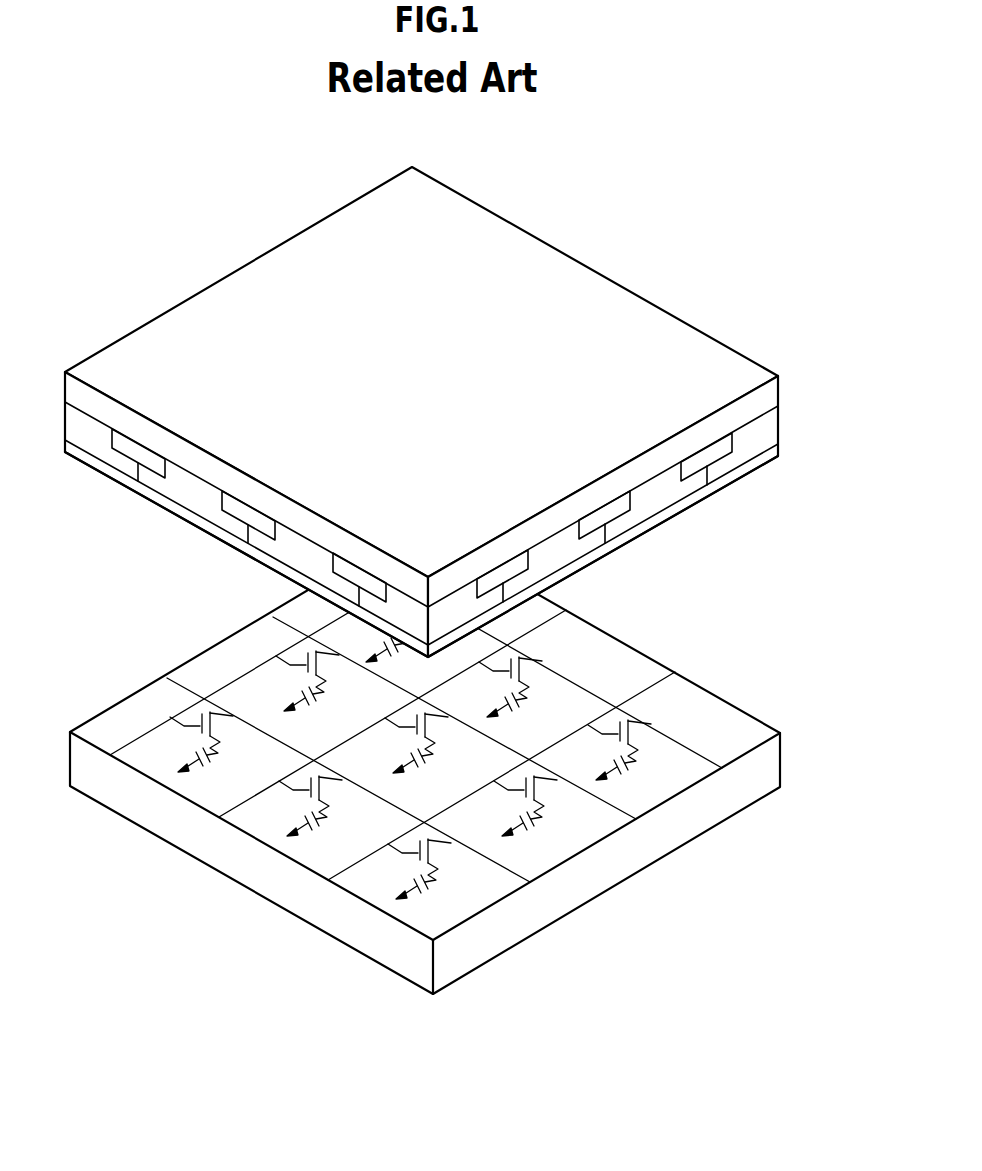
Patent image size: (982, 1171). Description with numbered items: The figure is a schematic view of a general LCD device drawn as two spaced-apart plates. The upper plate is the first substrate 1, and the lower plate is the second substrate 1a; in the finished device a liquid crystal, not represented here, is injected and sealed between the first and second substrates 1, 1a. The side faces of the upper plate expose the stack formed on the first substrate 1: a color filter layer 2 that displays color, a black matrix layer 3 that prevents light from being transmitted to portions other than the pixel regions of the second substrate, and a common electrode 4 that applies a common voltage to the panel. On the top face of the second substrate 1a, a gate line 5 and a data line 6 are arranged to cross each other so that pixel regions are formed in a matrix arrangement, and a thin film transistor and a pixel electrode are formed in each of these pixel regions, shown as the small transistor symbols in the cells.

The first substrate 1 is at (778, 390).
The second substrate 1a is at (773, 768).
The color filter layer 2 is at (778, 421).
The black matrix layer 3 is at (727, 445).
The common electrode 4 is at (760, 468).
The gate line 5 is at (618, 819).
The data line 6 is at (336, 872).